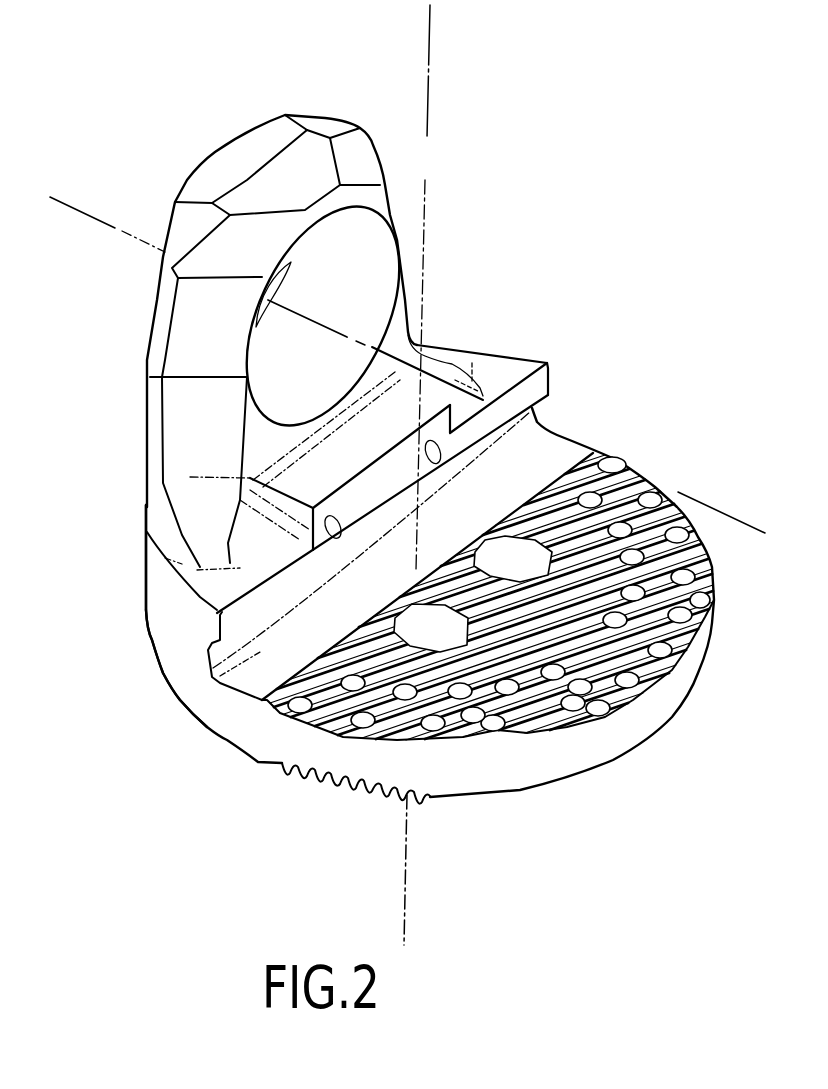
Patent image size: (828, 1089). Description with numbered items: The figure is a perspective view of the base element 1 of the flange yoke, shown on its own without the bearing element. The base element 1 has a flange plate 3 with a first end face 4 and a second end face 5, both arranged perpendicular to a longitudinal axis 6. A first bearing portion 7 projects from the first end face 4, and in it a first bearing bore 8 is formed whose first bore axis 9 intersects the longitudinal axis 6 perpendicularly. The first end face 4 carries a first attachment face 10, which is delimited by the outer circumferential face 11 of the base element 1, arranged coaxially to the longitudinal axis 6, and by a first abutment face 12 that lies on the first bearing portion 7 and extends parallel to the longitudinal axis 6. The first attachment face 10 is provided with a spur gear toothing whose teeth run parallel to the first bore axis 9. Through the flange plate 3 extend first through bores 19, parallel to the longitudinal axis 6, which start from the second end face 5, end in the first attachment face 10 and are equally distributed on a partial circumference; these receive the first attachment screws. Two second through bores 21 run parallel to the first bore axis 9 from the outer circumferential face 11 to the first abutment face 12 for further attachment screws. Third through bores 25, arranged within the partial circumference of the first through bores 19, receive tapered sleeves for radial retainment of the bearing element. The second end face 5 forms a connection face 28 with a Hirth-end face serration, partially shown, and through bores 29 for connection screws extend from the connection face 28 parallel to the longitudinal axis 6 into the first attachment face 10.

The base element 1 is at (298, 88).
The flange plate 3 is at (530, 777).
The first end face 4 is at (609, 424).
The second end face 5 is at (353, 812).
The longitudinal axis 6 is at (432, 52).
The first bearing portion 7 is at (160, 318).
The first bearing bore 8 is at (391, 279).
The first bore axis 9 is at (80, 210).
The first attachment face 10 is at (637, 467).
The outer circumferential face 11 is at (146, 592).
The first abutment face 12 is at (243, 607).
The first through bores 19 is at (472, 724).
The second through bores 21 is at (340, 518).
The third through bores 25 is at (518, 541).
The connection face 28 is at (187, 718).
The through bores for connection screws 29 is at (595, 715).